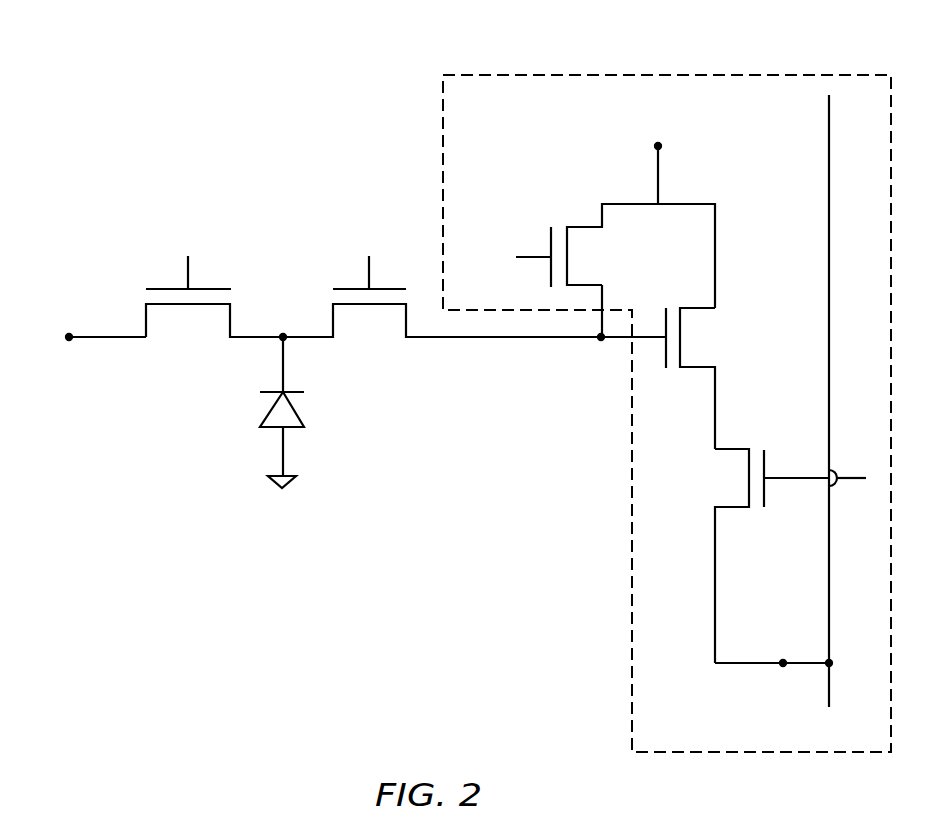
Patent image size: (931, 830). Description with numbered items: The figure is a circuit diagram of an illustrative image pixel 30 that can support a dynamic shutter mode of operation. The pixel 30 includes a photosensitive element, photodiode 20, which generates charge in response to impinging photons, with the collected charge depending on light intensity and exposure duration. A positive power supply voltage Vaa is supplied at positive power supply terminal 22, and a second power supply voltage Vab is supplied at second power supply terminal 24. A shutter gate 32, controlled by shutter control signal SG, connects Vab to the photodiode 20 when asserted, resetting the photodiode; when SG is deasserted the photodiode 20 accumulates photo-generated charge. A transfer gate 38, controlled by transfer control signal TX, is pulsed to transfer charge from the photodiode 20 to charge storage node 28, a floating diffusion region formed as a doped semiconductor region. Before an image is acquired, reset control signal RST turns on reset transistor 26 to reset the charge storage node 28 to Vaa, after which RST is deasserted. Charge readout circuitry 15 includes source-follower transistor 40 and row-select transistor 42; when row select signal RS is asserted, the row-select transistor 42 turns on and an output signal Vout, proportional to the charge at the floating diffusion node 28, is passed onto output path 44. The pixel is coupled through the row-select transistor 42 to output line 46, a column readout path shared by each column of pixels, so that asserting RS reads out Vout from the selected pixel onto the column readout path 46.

The charge readout circuitry 15 is at (832, 75).
The photodiode 20 is at (320, 418).
The positive power supply terminal 22 is at (659, 146).
The second power supply terminal 24 is at (69, 339).
The reset transistor 26 is at (530, 233).
The charge storage node 28 is at (601, 339).
The image pixel 30 is at (258, 88).
The shutter gate 32 is at (180, 322).
The transfer gate 38 is at (378, 325).
The source-follower transistor 40 is at (708, 345).
The row-select transistor 42 is at (720, 480).
The output path 44 is at (783, 665).
The output line 46 is at (830, 692).